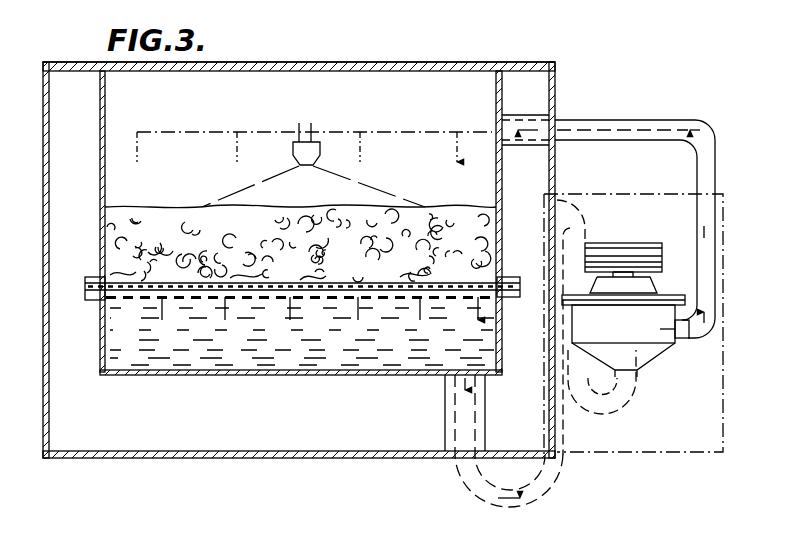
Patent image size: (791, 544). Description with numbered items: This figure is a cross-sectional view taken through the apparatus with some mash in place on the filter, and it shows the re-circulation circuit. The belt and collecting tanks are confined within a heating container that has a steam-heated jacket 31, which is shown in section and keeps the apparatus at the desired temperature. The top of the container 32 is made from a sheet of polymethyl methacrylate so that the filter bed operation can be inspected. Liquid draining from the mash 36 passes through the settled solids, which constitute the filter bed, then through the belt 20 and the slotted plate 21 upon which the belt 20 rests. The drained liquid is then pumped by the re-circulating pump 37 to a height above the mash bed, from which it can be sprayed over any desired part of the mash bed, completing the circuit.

The belt 20 is at (95, 278).
The slotted plate 21 is at (134, 302).
The steam-heated jacket 31 is at (85, 377).
The top of the container 32 is at (393, 62).
The mash 36 is at (345, 258).
The re-circulating pump 37 is at (653, 353).